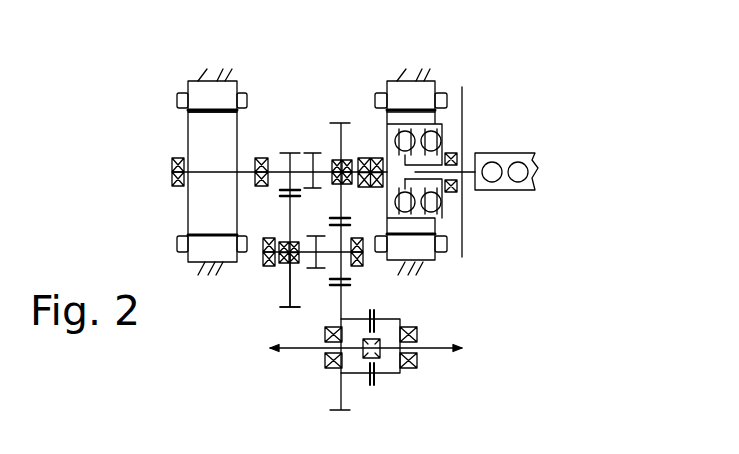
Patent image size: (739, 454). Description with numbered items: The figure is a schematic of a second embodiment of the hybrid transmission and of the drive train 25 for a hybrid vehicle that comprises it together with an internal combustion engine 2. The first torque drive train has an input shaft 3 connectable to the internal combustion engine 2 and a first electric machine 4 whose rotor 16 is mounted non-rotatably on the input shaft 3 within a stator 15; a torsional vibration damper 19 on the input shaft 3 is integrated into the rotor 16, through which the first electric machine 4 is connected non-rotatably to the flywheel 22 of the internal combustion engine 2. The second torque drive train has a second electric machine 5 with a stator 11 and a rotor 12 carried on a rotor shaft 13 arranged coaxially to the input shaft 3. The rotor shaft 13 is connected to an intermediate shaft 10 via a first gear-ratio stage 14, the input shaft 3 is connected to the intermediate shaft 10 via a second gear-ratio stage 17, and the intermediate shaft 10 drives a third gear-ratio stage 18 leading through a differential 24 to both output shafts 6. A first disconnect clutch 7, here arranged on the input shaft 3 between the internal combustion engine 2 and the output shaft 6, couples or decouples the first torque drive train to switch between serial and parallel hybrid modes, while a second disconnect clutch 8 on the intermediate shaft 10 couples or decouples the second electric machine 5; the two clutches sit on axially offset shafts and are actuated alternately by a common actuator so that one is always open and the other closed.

The internal combustion engine 2 is at (528, 172).
The input shaft 3 is at (463, 172).
The first electric machine 4 is at (415, 70).
The second electric machine 5 is at (213, 70).
The output shaft 6 is at (433, 348).
The first disconnect clutch 7 is at (317, 147).
The second disconnect clutch 8 is at (300, 310).
The intermediate shaft 10 is at (330, 253).
The stator 11 is at (230, 88).
The rotor 12 is at (209, 131).
The rotor shaft 13 is at (240, 166).
The first gear-ratio stage 14 is at (296, 180).
The stator 15 is at (428, 88).
The rotor 16 is at (428, 118).
The torsional vibration damper 19 is at (441, 140).
The second gear-ratio stage 17 is at (322, 217).
The third gear-ratio stage 18 is at (360, 284).
The flywheel 22 is at (462, 245).
The differential 24 is at (408, 381).
The drive train 25 is at (585, 95).